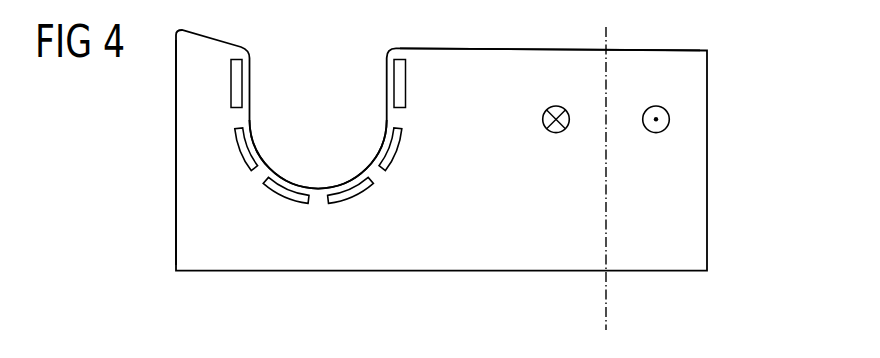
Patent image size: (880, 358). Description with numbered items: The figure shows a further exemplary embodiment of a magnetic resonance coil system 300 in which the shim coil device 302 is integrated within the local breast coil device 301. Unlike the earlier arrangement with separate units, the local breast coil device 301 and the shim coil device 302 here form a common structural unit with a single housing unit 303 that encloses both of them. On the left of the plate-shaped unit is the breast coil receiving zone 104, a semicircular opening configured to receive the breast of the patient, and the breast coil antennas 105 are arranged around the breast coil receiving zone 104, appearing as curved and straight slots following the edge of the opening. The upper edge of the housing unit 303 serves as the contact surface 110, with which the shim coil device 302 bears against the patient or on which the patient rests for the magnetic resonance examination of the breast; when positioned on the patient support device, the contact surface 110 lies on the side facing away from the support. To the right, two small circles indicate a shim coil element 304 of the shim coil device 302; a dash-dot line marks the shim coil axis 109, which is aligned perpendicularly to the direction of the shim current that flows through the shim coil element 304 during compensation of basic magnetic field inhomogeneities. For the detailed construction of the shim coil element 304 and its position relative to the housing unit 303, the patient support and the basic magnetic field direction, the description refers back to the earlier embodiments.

The breast coil receiving zone 104 is at (258, 117).
The breast coil antennas 105 is at (290, 196).
The shim coil axis 109 is at (607, 297).
The contact surface 110 is at (437, 44).
The magnetic resonance coil system 300 is at (452, 174).
The local breast coil device 301 is at (337, 223).
The shim coil device 302 is at (685, 110).
The housing unit 303 is at (176, 223).
The shim coil element 304 is at (661, 132).